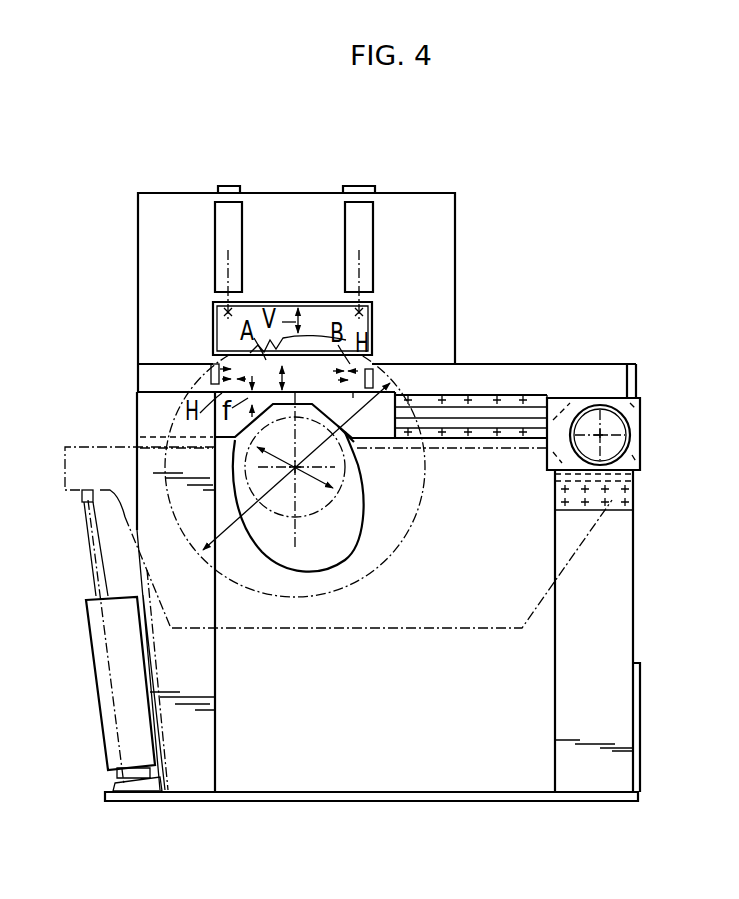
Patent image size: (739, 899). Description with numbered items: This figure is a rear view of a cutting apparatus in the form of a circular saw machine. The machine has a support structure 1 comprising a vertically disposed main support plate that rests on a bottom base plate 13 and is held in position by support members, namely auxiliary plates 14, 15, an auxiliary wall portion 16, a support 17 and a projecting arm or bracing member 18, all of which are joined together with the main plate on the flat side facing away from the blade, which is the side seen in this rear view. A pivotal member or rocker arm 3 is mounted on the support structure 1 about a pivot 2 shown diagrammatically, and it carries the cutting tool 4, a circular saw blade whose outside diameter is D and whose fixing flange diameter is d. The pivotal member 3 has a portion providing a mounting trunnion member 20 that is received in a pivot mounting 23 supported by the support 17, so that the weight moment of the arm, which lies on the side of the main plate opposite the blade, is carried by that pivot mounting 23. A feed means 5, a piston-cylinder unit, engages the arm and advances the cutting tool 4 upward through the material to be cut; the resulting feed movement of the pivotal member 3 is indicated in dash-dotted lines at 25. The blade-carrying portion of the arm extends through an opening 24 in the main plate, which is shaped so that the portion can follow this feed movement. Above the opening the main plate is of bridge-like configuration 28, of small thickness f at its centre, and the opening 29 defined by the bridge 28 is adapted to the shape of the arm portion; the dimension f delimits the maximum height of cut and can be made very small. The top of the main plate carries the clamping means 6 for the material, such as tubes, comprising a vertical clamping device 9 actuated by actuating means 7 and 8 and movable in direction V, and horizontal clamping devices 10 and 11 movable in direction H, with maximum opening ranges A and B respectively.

The support structure 1 is at (364, 806).
The pivot 2 is at (598, 432).
The pivotal member 3 is at (421, 598).
The cutting tool 4 is at (364, 567).
The feed means 5 is at (103, 739).
The clamping means 6 is at (483, 192).
The actuating means 7 is at (228, 236).
The actuating means 8 is at (353, 249).
The vertical clamping device 9 is at (222, 327).
The horizontal clamping device 10 is at (386, 366).
The horizontal clamping device 11 is at (210, 373).
The base plate 13 is at (497, 798).
The auxiliary plate 14 is at (636, 801).
The auxiliary plate 15 is at (164, 793).
The auxiliary wall portion 16 is at (205, 737).
The support 17 is at (581, 777).
The projecting arm 18 is at (484, 396).
The mounting trunnion member 20 is at (603, 412).
The pivot mounting 23 is at (641, 438).
The opening 24 is at (290, 573).
The feed movement 25 is at (307, 520).
The bridge configuration 28 is at (311, 400).
The opening 29 is at (351, 433).